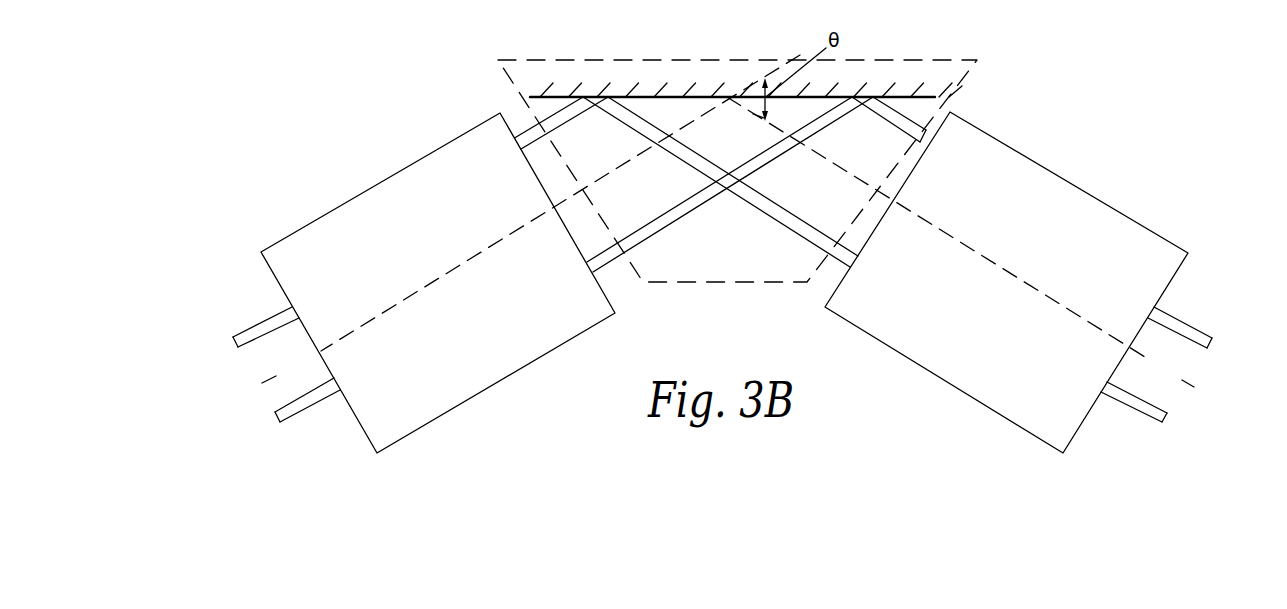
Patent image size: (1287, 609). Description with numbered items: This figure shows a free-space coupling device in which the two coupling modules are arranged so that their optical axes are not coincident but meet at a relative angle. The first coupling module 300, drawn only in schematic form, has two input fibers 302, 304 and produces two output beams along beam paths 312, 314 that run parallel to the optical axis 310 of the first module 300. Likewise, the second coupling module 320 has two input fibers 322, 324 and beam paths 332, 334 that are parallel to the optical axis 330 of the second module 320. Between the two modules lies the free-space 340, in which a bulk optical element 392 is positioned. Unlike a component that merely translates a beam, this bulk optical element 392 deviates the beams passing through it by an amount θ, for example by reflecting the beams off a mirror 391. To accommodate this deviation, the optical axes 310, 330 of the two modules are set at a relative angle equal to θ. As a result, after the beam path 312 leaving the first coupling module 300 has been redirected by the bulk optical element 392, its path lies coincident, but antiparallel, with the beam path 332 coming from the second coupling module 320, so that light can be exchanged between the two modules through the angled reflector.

The first coupling module 300 is at (434, 399).
The input fiber 302 is at (260, 323).
The input fiber 304 is at (313, 401).
The optical axis of the first module 310 is at (300, 363).
The beam path 312 is at (608, 263).
The beam path 314 is at (513, 131).
The second coupling module 320 is at (1122, 237).
The input fiber 322 is at (1174, 318).
The input fiber 324 is at (1143, 412).
The optical axis of the second module 330 is at (1165, 368).
The beam path 332 is at (831, 272).
The beam path 334 is at (916, 130).
The free-space 340 is at (754, 314).
The mirror 391 is at (647, 96).
The bulk optical element 392 is at (972, 72).